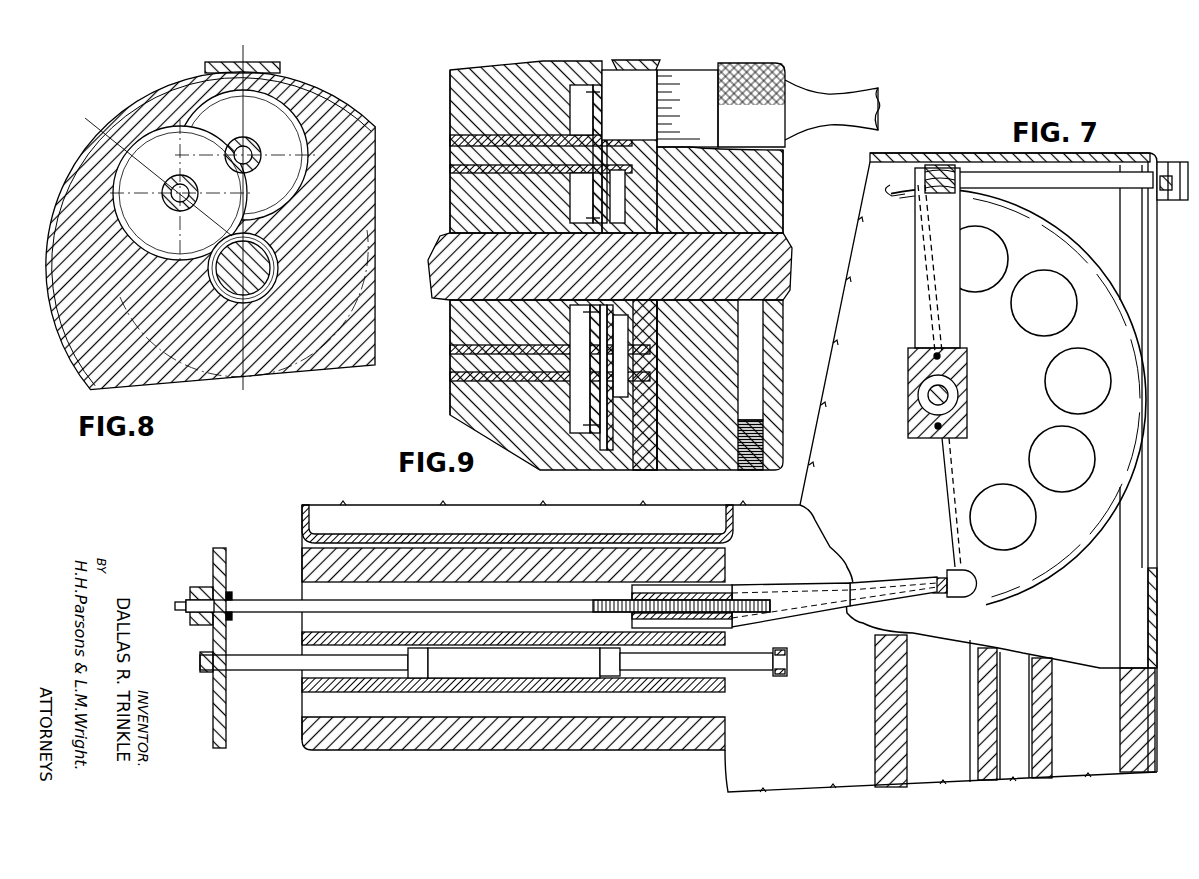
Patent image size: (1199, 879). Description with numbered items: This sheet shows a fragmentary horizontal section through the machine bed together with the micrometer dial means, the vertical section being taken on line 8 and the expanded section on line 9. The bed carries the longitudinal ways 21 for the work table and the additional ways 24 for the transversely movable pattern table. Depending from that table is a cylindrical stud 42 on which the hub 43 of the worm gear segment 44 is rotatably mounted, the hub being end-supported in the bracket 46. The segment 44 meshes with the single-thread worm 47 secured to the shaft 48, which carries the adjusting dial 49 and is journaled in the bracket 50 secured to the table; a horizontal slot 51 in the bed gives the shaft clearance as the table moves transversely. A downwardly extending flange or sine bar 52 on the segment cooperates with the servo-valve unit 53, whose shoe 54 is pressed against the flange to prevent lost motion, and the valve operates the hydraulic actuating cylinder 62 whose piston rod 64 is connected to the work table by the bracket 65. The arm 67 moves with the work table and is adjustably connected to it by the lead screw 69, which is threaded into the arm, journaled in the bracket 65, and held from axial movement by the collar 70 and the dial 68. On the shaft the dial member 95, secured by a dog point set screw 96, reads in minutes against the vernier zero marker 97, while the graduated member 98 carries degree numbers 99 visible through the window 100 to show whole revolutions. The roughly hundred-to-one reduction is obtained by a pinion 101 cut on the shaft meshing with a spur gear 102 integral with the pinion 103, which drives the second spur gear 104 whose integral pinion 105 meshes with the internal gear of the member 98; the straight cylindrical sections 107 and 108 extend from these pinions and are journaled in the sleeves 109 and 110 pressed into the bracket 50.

In FIG. 9, the section line 8— 8 is at (593, 46).
In FIG. 7, the section line 8— 8 is at (1162, 222).
In FIG. 8, the section line 9— 9 is at (268, 45).
In FIG. 7, the longitudinal ways 21 is at (302, 562).
In FIG. 7, the additional ways 24 is at (875, 742).
In FIG. 7, the cylindrical stud 42 is at (925, 400).
In FIG. 7, the hub 43 is at (910, 390).
In FIG. 7, the worm gear segment 44 is at (967, 468).
In FIG. 7, the bracket 46 is at (917, 305).
In FIG. 7, the worm 47 is at (940, 170).
In FIG. 7, the shaft 48 is at (1076, 186).
In FIG. 7, the adjusting dial 49 is at (1178, 204).
In FIG. 9, the bracket 50 is at (450, 84).
In FIG. 7, the bracket 50 is at (1160, 190).
In FIG. 7, the horizontal slot 51 is at (1152, 315).
In FIG. 7, the downwardly extending flange 52 is at (953, 540).
In FIG. 7, the servo-valve unit 53 is at (905, 585).
In FIG. 7, the shoe 54 is at (952, 592).
In FIG. 7, the hydraulic actuating cylinder 62 is at (566, 672).
In FIG. 7, the piston rod 64 is at (277, 664).
In FIG. 7, the bracket 65 is at (213, 713).
In FIG. 7, the arm 67 is at (803, 588).
In FIG. 7, the dial 68 is at (197, 588).
In FIG. 7, the lead screw 69 is at (255, 606).
In FIG. 7, the collar 70 is at (230, 597).
In FIG. 9, the dial member 95 is at (763, 182).
In FIG. 9, the dog point set screw 96 is at (753, 318).
In FIG. 9, the vernier calibrated zero marker 97 is at (657, 68).
In FIG. 9, the graduated member 98 is at (640, 462).
In FIG. 9, the degree numbers 99 is at (642, 93).
In FIG. 9, the window 100 is at (628, 62).
In FIG. 8, the pinion 101 is at (243, 300).
In FIG. 9, the pinion 101 is at (540, 300).
In FIG. 8, the spur gear 102 is at (135, 178).
In FIG. 9, the spur gear 102 is at (577, 405).
In FIG. 9, the pinion 103 is at (610, 403).
In FIG. 8, the second spur gear 104 is at (220, 118).
In FIG. 9, the second spur gear 104 is at (593, 195).
In FIG. 9, the integral pinion 105 is at (670, 203).
In FIG. 9, the straight cylindrical section 107 is at (465, 360).
In FIG. 9, the straight cylindrical section 108 is at (450, 145).
In FIG. 9, the sleeve 109 is at (460, 380).
In FIG. 9, the sleeve 110 is at (450, 171).